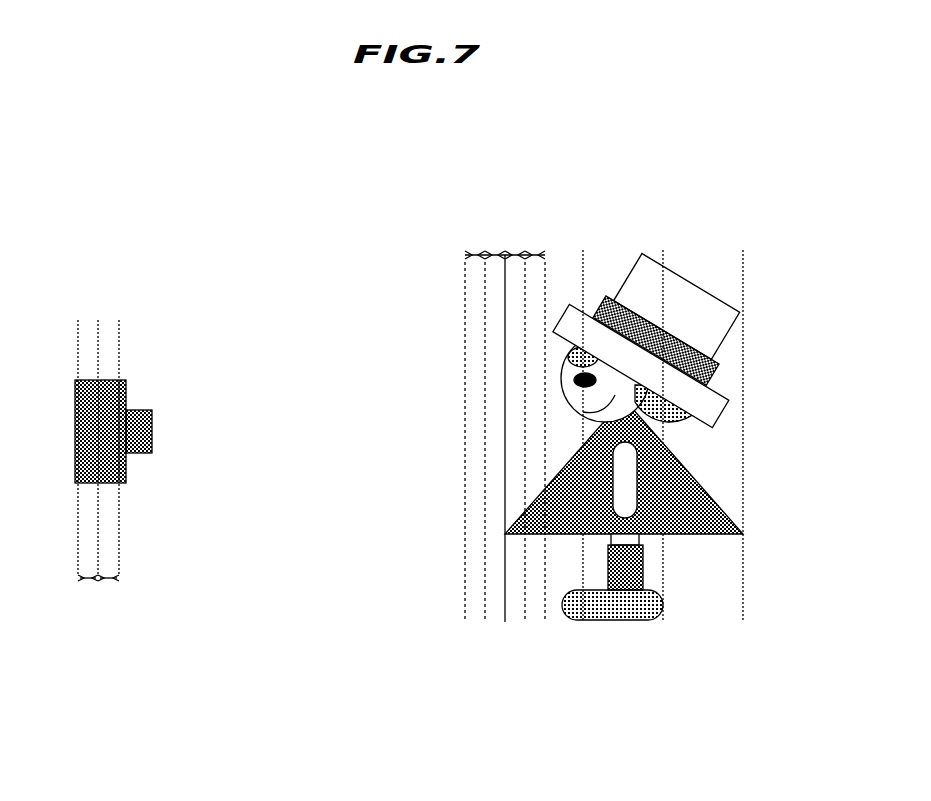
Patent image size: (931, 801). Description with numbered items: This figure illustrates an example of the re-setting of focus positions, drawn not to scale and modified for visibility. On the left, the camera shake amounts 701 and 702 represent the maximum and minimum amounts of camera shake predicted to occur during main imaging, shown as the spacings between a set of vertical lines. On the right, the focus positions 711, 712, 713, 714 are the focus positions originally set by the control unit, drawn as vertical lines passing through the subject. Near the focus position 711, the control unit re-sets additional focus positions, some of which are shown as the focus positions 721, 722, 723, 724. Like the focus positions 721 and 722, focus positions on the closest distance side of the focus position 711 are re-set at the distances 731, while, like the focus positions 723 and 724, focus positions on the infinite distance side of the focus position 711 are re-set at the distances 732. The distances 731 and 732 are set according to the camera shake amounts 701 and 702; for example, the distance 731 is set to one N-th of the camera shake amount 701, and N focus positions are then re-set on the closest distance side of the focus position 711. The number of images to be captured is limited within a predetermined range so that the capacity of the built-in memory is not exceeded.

The camera shake amount 701 is at (90, 585).
The camera shake amount 702 is at (110, 585).
The focus position 711 is at (507, 277).
The focus position 712 is at (583, 267).
The focus position 713 is at (663, 262).
The focus position 714 is at (743, 267).
The focus position 721 is at (465, 622).
The focus position 722 is at (485, 622).
The focus position 723 is at (525, 622).
The focus position 724 is at (545, 622).
The distance 731 is at (476, 250).
The distance 732 is at (535, 250).